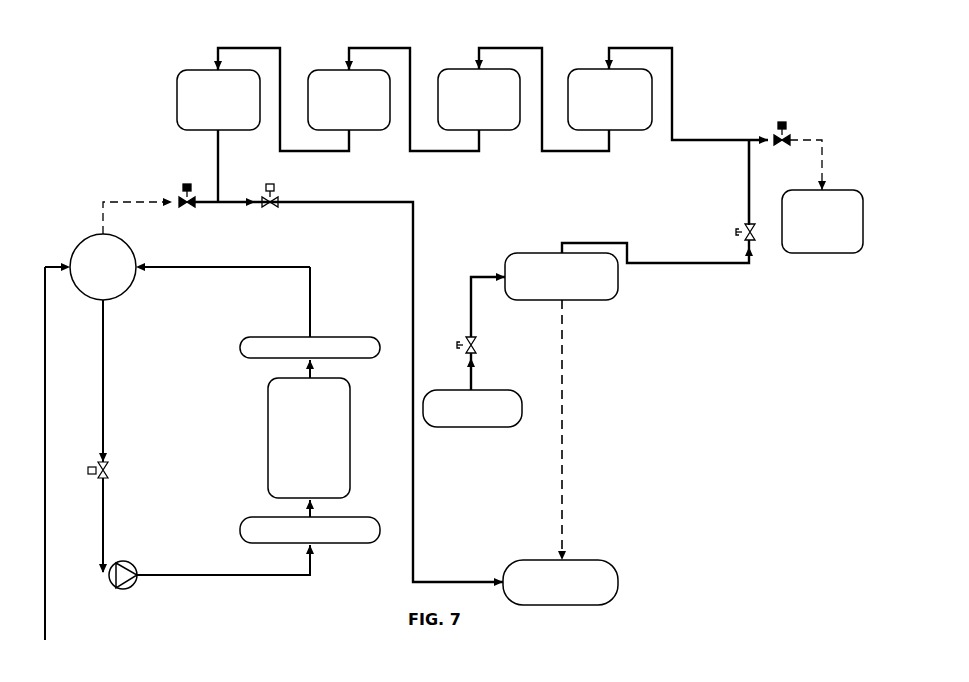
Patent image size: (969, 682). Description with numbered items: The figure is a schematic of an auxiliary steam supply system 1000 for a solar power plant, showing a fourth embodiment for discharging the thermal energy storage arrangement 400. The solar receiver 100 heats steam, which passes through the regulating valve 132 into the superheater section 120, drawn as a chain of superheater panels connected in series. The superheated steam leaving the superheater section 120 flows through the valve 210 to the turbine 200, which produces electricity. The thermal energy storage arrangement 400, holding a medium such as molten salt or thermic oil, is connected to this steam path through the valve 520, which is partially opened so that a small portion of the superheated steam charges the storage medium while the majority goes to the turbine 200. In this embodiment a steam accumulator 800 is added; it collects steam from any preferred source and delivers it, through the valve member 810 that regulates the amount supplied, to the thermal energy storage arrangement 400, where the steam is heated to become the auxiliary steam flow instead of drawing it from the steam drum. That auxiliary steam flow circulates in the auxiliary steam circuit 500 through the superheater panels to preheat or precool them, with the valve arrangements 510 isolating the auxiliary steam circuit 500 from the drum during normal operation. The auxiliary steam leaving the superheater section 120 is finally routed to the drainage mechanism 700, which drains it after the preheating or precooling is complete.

The system 1000 is at (733, 86).
The solar receiver 100 is at (150, 150).
The superheater section 120 is at (455, 50).
The regulating valve 132 is at (165, 192).
The auxiliary steam circuit 500 is at (481, 317).
The valve arrangements 510 is at (285, 195).
The valve 520 is at (735, 225).
The valve 210 is at (786, 122).
The turbine 200 is at (808, 262).
The thermal energy storage arrangement 400 is at (602, 305).
The valve member 810 is at (482, 346).
The steam accumulator 800 is at (460, 440).
The drainage mechanism 700 is at (610, 556).